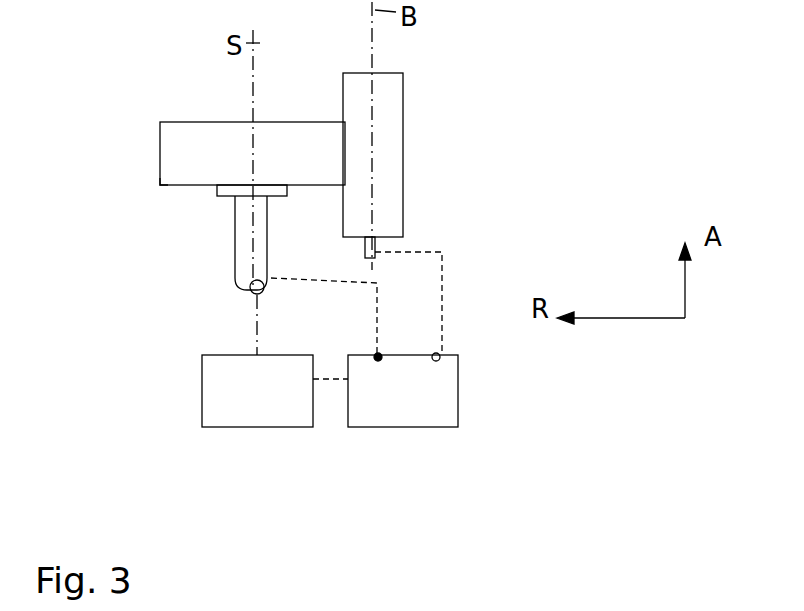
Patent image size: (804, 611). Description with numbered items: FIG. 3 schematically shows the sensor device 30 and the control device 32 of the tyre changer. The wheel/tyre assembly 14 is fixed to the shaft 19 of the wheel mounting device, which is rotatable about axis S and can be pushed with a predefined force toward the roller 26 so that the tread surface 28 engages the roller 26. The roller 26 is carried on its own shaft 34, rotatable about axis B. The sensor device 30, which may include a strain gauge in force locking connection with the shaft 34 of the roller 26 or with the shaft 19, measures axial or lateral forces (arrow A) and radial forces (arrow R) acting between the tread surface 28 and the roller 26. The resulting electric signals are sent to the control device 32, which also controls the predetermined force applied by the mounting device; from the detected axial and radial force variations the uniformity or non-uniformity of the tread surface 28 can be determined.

The wheel/tyre assembly 14 is at (170, 151).
The tread surface 28 is at (158, 180).
The shaft 19 is at (240, 250).
The roller 26 is at (403, 207).
The shaft 34 is at (365, 248).
The control device 32 is at (250, 427).
The sensor device 30 is at (394, 427).